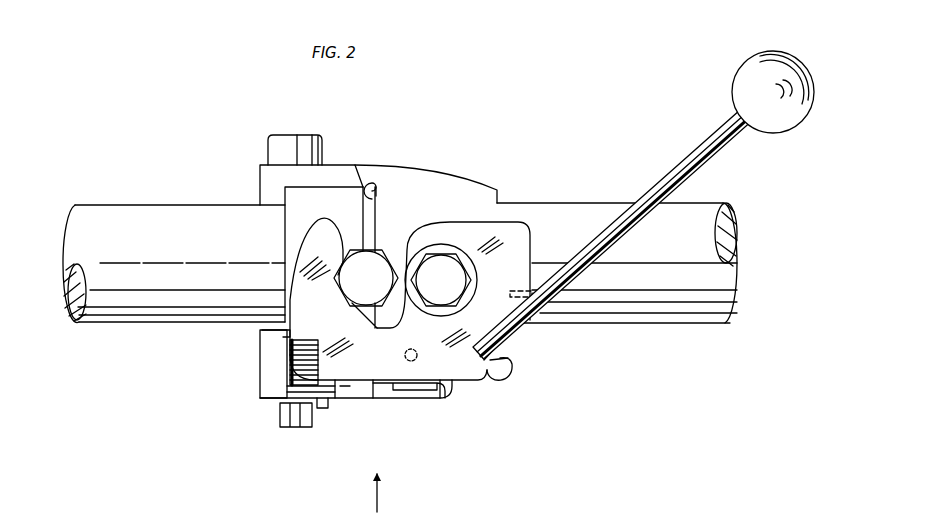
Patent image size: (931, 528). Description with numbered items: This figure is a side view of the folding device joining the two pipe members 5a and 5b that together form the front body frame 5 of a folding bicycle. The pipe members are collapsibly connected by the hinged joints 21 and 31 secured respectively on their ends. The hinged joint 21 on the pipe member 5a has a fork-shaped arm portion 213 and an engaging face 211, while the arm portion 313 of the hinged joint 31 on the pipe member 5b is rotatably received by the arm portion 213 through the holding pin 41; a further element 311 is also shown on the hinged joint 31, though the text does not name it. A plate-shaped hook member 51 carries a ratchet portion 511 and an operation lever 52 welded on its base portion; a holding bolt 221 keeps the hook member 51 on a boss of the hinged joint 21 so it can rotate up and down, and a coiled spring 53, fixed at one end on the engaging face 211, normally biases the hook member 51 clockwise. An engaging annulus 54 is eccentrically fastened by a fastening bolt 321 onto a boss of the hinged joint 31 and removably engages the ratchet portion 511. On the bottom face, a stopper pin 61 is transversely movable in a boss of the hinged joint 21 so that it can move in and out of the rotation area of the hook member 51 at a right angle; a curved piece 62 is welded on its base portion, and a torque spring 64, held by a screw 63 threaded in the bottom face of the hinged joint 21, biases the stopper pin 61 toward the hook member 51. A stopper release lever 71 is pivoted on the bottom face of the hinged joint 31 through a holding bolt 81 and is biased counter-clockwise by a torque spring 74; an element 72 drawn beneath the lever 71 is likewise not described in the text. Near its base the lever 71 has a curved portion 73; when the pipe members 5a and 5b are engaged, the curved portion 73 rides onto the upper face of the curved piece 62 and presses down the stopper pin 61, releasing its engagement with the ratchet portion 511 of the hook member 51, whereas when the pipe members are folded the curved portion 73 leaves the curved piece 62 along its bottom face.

The front body frame 5 is at (153, 214).
The pipe member 5a is at (656, 300).
The pipe member 5b is at (143, 327).
The hinged joint 21 is at (463, 183).
The engaging face 211 is at (381, 196).
The arm portion 213 is at (262, 173).
The holding bolt 221 is at (447, 268).
The hinged joint 31 is at (334, 198).
The hook 311 is at (379, 190).
The arm portion 313 is at (262, 334).
The fastening bolt 321 is at (378, 272).
The holding pin 41 is at (297, 140).
The hook member 51 is at (317, 237).
The ratchet portion 511 is at (340, 274).
The operation lever 52 is at (693, 158).
The coiled spring 53 is at (533, 290).
The engaging annulus 54 is at (377, 325).
The stopper pin 61 is at (417, 345).
The curved piece 62 is at (427, 386).
The screw 63 is at (505, 378).
The torque spring 64 is at (511, 357).
The stopper release lever 71 is at (400, 404).
The bracket 72 is at (361, 389).
The curved portion 73 is at (450, 392).
The torque spring 74 is at (293, 351).
The holding bolt 81 is at (325, 408).